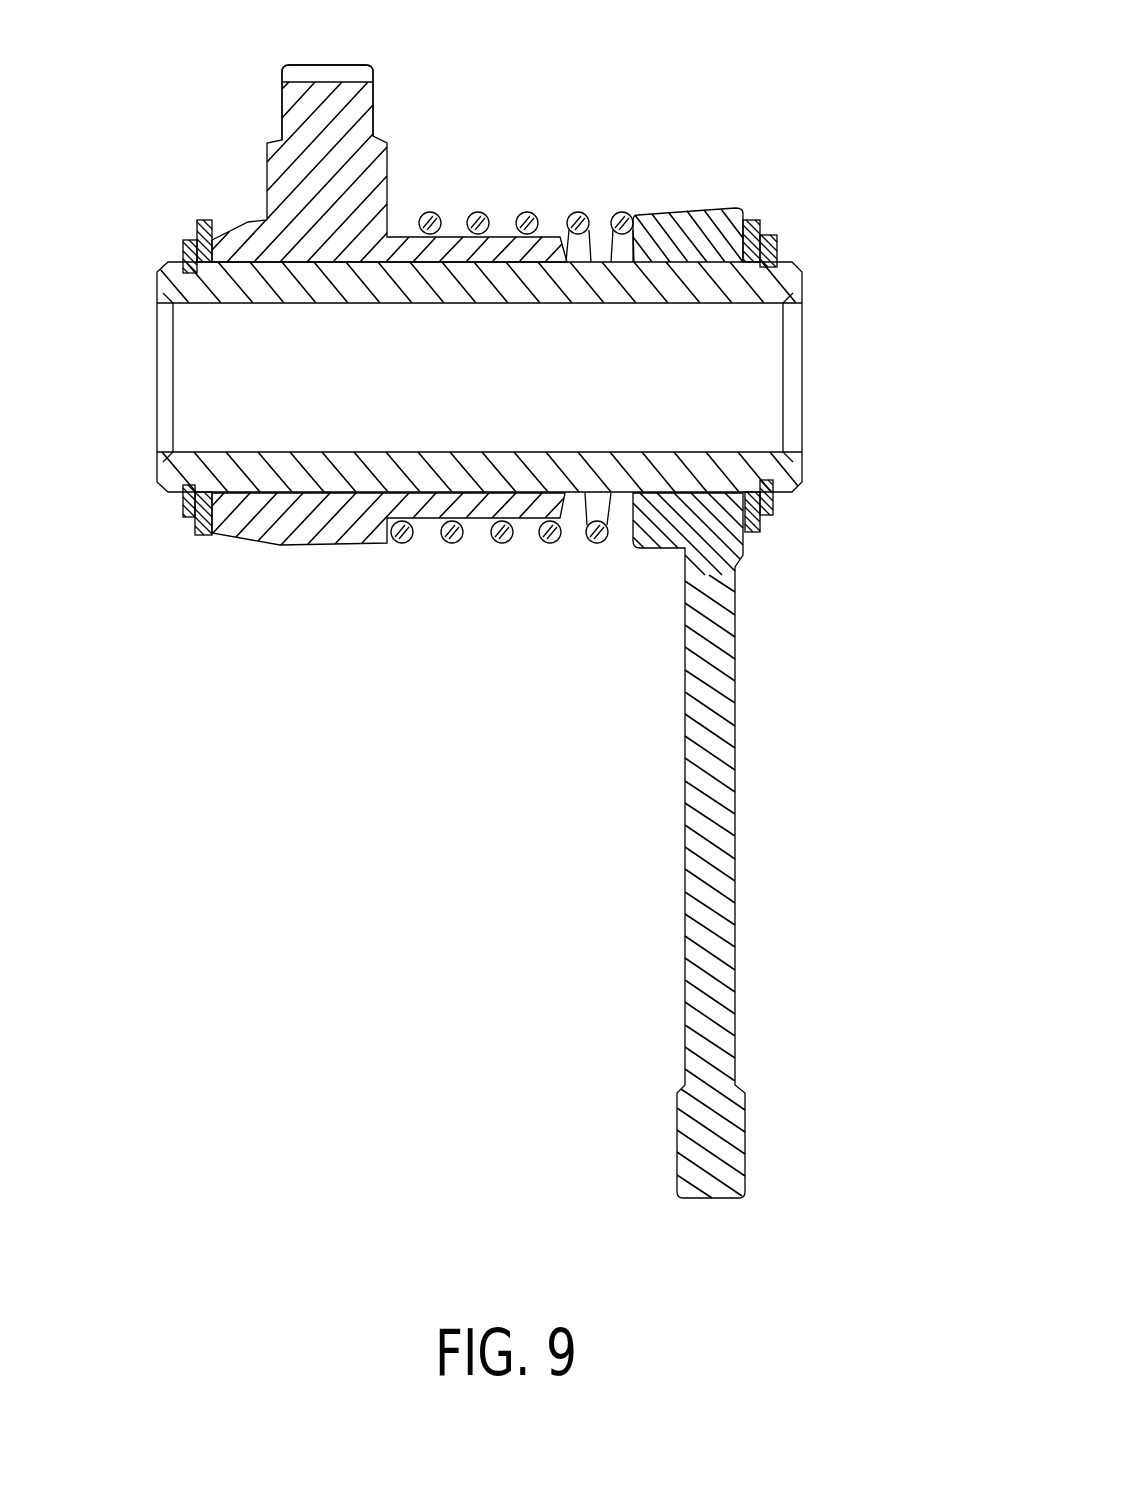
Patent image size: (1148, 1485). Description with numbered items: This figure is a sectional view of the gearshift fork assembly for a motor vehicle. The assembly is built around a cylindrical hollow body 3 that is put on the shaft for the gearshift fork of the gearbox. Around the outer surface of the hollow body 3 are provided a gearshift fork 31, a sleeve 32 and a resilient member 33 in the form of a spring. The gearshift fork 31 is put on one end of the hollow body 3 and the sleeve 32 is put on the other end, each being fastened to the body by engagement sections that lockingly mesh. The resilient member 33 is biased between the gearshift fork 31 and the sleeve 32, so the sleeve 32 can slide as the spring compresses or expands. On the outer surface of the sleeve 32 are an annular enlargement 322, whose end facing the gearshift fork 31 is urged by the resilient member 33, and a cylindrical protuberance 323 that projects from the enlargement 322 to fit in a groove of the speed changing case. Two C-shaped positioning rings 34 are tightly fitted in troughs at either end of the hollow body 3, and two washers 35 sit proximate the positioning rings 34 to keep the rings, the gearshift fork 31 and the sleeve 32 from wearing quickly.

The hollow body 3 is at (824, 296).
The gearshift fork 31 is at (685, 212).
The sleeve 32 is at (377, 330).
The annular enlargement 322 is at (272, 546).
The cylindrical protuberance 323 is at (368, 107).
The resilient member 33 is at (528, 212).
The positioning ring 34 is at (188, 240).
The washer 35 is at (756, 220).